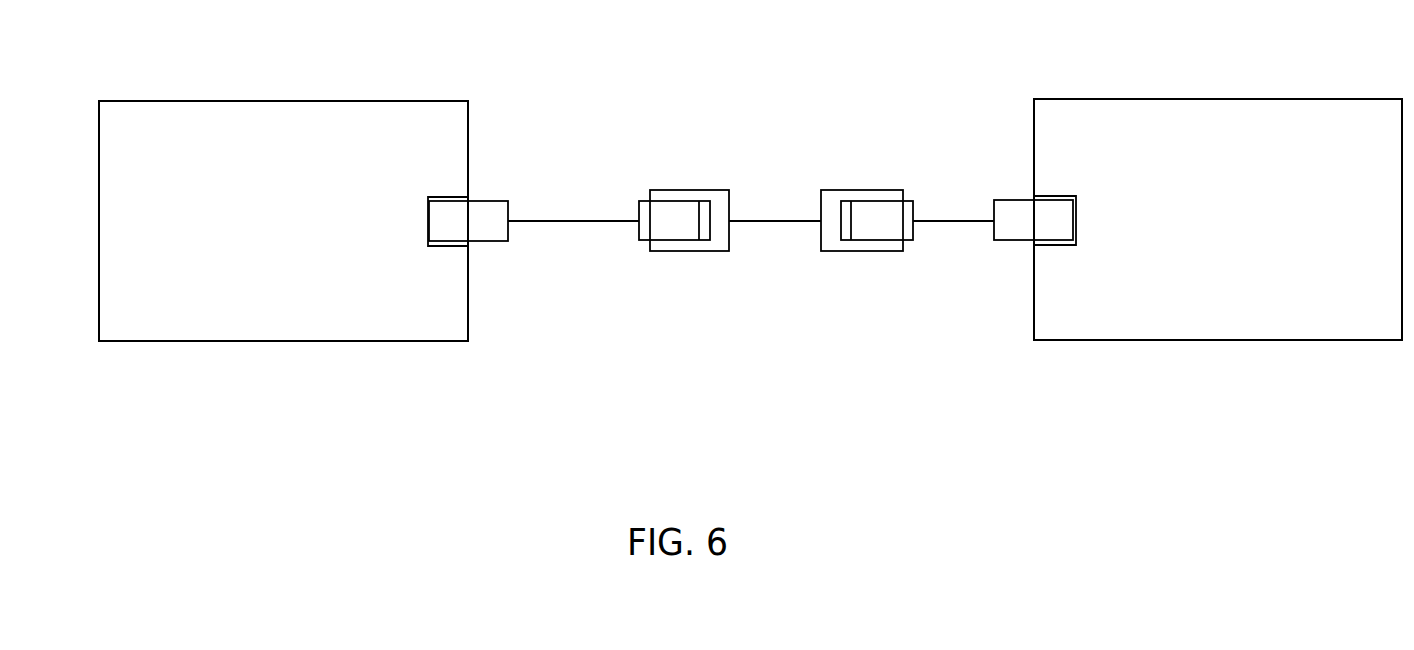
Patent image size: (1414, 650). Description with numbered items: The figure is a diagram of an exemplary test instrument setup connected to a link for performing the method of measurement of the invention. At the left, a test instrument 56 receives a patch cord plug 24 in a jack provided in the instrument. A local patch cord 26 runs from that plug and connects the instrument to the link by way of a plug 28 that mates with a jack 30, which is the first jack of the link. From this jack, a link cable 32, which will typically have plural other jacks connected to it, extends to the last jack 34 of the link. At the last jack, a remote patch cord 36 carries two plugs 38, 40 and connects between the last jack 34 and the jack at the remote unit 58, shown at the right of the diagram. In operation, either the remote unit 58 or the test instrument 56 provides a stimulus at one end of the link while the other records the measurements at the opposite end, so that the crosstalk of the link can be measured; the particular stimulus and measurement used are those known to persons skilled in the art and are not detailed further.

The patch cord plug 24 is at (491, 198).
The local patch cord 26 is at (583, 221).
The plug 28 is at (659, 221).
The jack 30 is at (665, 190).
The link cable 32 is at (741, 216).
The last jack 34 is at (893, 190).
The remote patch cord 36 is at (955, 222).
The plug 38 is at (910, 197).
The plug 40 is at (1015, 242).
The test instrument 56 is at (387, 341).
The remote unit 58 is at (1177, 340).